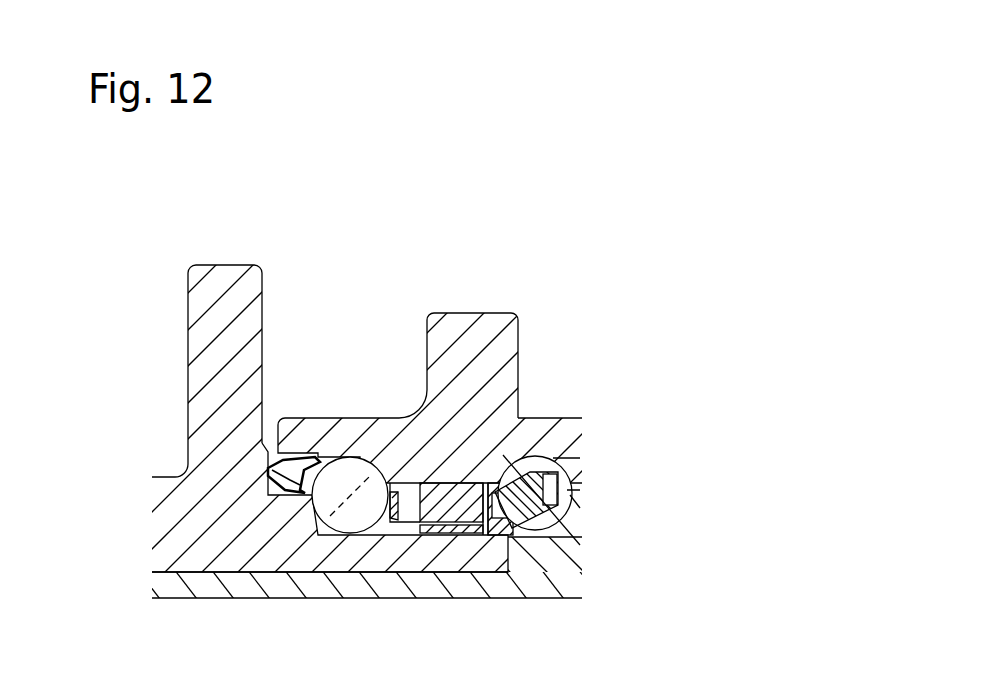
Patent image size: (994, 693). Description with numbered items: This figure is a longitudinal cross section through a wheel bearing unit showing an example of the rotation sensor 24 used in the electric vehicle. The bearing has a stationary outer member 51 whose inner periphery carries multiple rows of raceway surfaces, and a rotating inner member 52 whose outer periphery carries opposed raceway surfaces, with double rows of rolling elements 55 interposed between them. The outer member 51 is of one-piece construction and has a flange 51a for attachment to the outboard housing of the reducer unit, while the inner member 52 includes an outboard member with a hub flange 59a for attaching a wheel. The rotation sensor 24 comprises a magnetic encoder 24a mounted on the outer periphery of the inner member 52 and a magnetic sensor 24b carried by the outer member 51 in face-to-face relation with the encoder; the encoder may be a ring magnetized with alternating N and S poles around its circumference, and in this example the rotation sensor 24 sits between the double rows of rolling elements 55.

The rotation sensor 24 is at (613, 482).
The magnetic encoder 24a is at (452, 530).
The magnetic sensor 24b is at (455, 493).
The outer member 51 is at (377, 417).
The flange 51a is at (463, 327).
The inner member 52 is at (186, 532).
The rolling elements 55 is at (348, 470).
The hub flange 59a is at (210, 295).